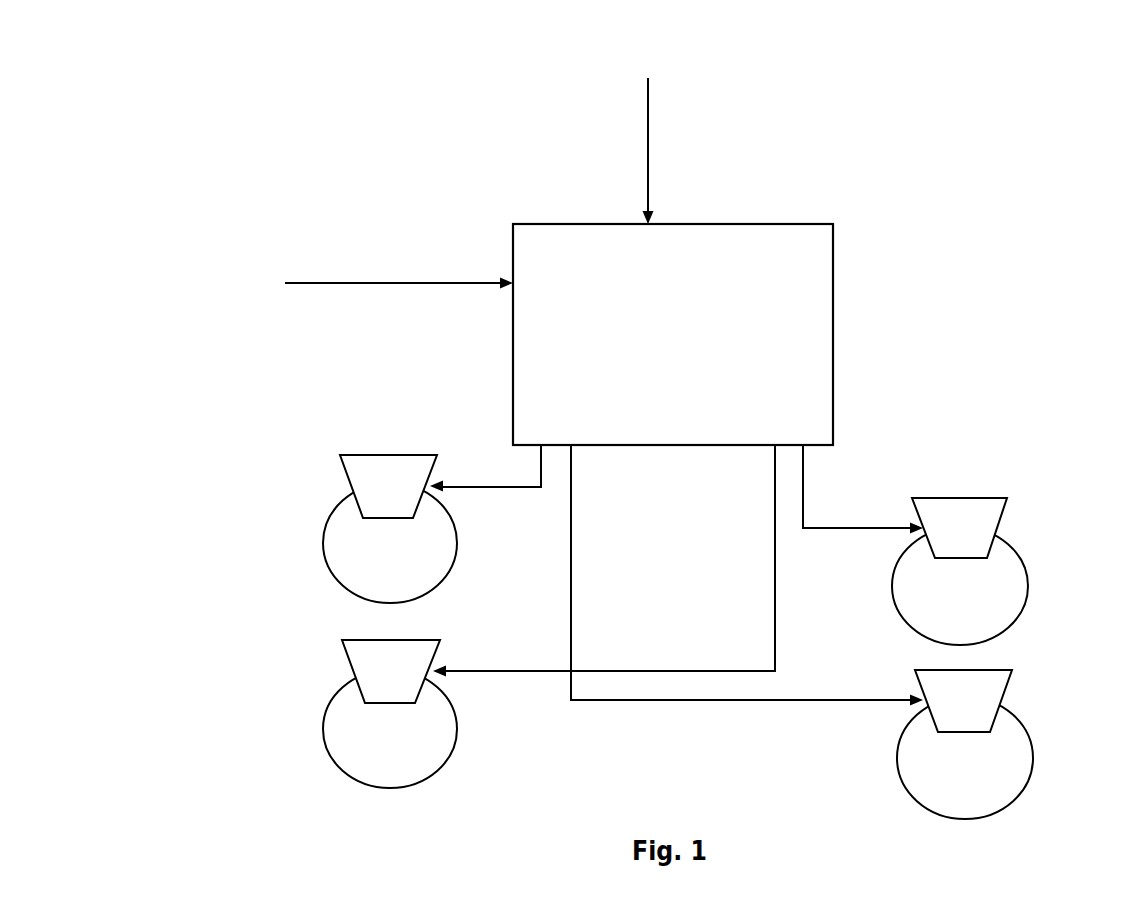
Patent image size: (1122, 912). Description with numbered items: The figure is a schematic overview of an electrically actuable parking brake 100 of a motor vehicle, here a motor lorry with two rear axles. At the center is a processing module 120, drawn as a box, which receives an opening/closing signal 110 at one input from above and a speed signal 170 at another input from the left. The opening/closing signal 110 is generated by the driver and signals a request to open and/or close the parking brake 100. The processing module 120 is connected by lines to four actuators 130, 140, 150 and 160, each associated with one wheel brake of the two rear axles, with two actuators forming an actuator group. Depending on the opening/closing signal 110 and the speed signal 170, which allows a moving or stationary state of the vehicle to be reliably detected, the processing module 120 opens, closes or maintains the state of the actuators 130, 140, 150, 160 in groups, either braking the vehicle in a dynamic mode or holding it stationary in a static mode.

The electrically actuable parking brake 100 is at (218, 111).
The opening/closing signal 110 is at (648, 163).
The processing module 120 is at (833, 280).
The actuator 130 is at (348, 483).
The actuator 140 is at (1008, 525).
The actuator 150 is at (350, 670).
The actuator 160 is at (1010, 698).
The speed signal 170 is at (442, 283).